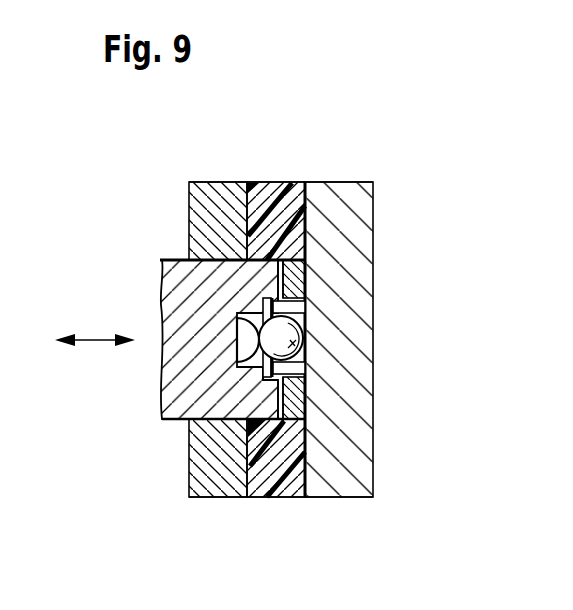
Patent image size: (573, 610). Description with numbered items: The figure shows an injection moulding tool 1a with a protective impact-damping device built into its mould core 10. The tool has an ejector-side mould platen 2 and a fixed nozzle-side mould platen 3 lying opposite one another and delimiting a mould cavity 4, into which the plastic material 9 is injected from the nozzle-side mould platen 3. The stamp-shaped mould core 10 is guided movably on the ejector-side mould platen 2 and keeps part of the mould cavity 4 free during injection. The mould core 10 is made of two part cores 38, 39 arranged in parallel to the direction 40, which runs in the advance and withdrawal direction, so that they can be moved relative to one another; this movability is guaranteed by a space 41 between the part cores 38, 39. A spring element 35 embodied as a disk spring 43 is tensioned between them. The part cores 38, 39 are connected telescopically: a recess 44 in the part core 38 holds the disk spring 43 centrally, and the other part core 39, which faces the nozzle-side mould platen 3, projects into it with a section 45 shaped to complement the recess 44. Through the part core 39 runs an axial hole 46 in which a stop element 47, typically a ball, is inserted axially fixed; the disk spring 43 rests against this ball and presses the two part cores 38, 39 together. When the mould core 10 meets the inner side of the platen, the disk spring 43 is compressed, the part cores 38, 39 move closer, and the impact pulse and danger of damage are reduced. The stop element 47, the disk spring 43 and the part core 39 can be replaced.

The injection moulding tool 1a is at (308, 353).
The ejector-side mould platen 2 is at (221, 470).
The nozzle-side mould platen 3 is at (354, 478).
The mould cavity 4 is at (274, 372).
The plastic material 9 is at (293, 476).
The mould core 10 is at (190, 334).
The part core 38 is at (188, 400).
The part core 39 is at (294, 396).
The direction 40 is at (99, 337).
The space 41 is at (281, 268).
The disk spring 43 is at (230, 243).
The spring element 35 is at (250, 316).
The recess 44 is at (262, 379).
The section 45 is at (286, 302).
The hole 46 is at (298, 319).
The stop element 47 is at (293, 347).